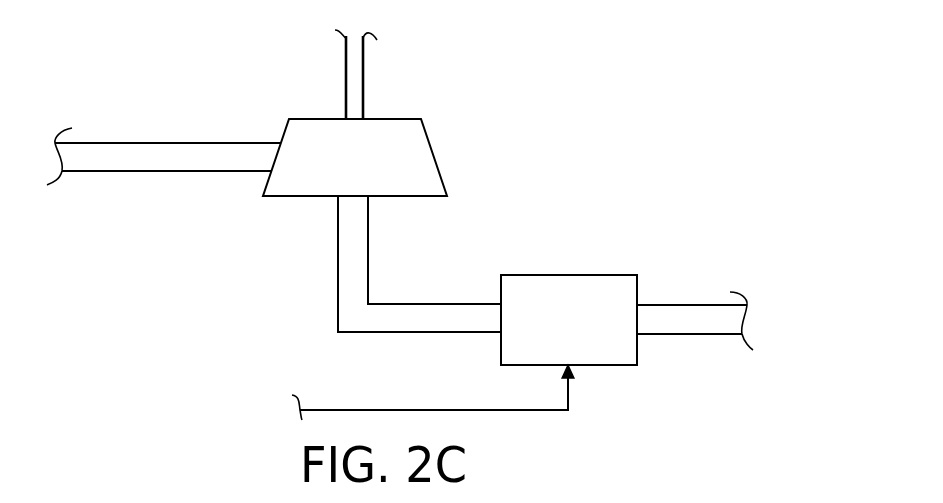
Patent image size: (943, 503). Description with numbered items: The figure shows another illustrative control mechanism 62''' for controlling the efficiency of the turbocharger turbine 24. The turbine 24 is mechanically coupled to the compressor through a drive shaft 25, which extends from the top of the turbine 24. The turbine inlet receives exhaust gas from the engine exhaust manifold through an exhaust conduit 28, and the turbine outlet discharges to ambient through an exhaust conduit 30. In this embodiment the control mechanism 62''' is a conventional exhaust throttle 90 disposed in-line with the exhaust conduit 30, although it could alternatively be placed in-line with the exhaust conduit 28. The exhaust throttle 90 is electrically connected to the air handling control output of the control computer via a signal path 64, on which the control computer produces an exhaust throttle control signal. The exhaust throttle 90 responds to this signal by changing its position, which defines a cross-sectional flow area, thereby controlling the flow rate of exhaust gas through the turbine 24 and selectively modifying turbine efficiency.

The turbine 24 is at (431, 147).
The drive shaft 25 is at (364, 83).
The exhaust conduit 28 is at (203, 143).
The exhaust conduit 30 is at (418, 304).
The signal path 64 is at (387, 410).
The exhaust throttle 90 is at (552, 275).
The control mechanism 62''' is at (660, 104).